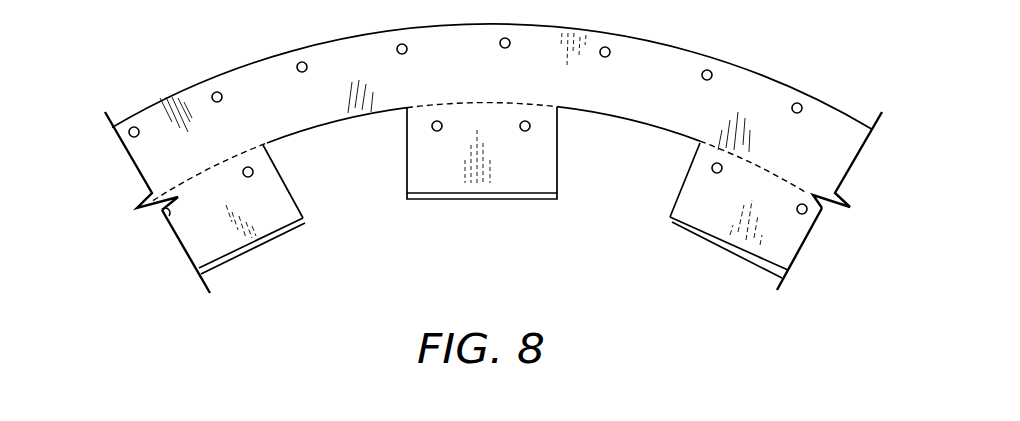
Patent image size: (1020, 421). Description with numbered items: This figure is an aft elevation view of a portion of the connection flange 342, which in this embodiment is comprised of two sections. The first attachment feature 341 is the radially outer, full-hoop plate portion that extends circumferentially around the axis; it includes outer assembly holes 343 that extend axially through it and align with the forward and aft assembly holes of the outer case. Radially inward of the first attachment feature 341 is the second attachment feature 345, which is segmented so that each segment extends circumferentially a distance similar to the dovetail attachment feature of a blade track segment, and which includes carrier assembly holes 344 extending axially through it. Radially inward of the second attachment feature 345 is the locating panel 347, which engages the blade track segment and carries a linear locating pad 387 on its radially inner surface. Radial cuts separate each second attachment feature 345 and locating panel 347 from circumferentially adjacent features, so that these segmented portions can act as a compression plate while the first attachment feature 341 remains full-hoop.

The first attachment feature 341 is at (123, 147).
The connection flange 342 is at (659, 58).
The outer assembly holes 343 is at (298, 62).
The carrier assembly holes 344 is at (433, 127).
The second attachment feature 345 is at (160, 230).
The locating panel 347 is at (196, 268).
The locating pad 387 is at (252, 249).